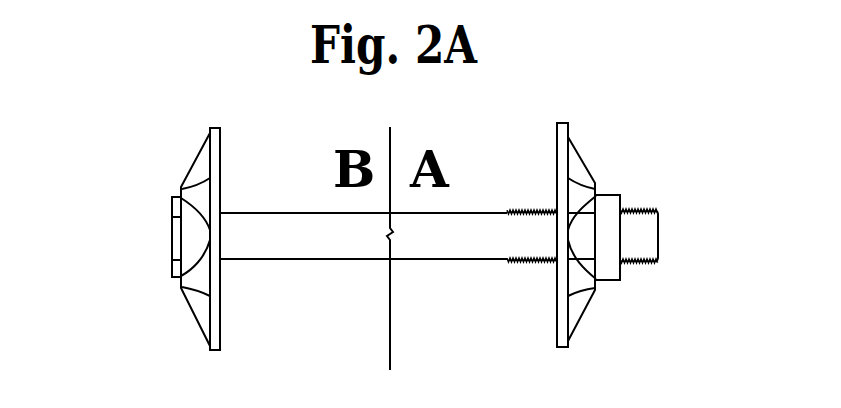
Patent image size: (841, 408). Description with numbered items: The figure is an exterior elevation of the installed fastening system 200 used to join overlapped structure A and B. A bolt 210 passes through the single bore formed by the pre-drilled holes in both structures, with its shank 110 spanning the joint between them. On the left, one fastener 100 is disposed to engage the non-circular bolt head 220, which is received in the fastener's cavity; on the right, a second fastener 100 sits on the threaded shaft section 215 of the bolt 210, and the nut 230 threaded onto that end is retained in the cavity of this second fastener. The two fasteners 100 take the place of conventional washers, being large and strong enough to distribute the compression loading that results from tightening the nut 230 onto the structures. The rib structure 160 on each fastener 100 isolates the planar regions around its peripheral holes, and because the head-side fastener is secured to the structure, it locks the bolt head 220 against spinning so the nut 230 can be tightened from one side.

The fastening system 200 is at (183, 108).
The fastener 100 is at (178, 163).
The bolt 210 is at (465, 237).
The shank 110 is at (246, 306).
The threaded shaft section 215 is at (640, 207).
The bolt head 220 is at (170, 239).
The rib structure 160 is at (183, 281).
The nut 230 is at (612, 283).